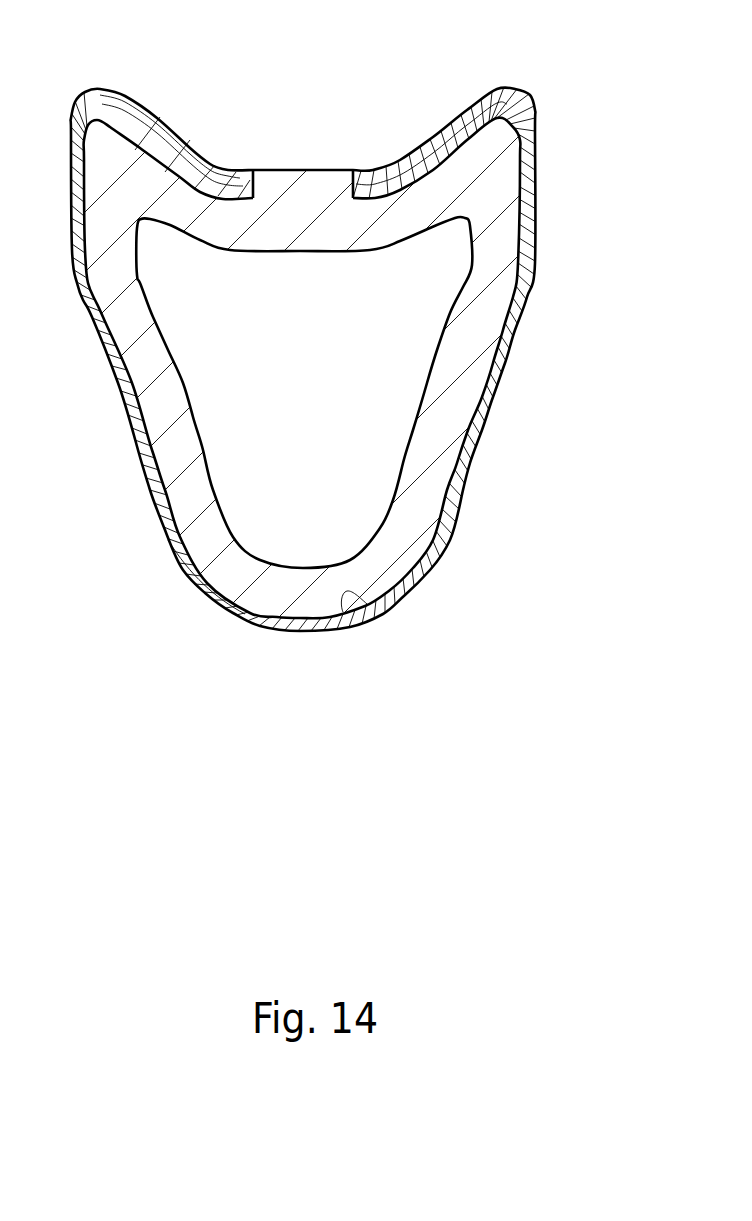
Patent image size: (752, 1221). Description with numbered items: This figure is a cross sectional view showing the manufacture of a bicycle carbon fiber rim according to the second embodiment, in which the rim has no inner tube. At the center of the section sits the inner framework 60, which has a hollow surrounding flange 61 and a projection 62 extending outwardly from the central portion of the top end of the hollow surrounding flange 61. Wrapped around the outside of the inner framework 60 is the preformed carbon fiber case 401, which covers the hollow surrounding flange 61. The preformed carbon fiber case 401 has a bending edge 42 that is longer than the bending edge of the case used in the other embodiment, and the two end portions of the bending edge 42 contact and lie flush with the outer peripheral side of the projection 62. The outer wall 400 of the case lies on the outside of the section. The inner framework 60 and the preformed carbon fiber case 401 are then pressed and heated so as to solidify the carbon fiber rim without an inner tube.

The inner framework 60 is at (476, 382).
The hollow surrounding flange 61 is at (300, 569).
The projection 62 is at (318, 187).
The bending edge 42 is at (227, 177).
The outer rim wall 400 is at (380, 608).
The preformed carbon fiber case 401 is at (445, 547).